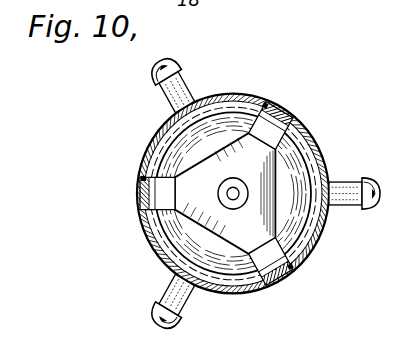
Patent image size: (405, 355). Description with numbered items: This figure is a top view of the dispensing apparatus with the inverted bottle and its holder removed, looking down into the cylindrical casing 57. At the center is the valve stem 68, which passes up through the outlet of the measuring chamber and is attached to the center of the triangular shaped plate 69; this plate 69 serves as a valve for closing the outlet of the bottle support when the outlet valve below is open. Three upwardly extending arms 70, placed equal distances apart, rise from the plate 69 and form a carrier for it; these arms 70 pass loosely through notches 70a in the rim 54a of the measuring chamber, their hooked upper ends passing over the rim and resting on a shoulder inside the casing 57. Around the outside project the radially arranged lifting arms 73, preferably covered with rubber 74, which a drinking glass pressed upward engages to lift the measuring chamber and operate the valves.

The cylindrical casing 57 is at (147, 137).
The rim of the measuring chamber 54a is at (149, 231).
The valve stem 68 is at (236, 191).
The triangular shaped plate 69 is at (268, 165).
The upwardly extending arms 70 is at (163, 197).
The notches 70a is at (263, 58).
The lifting arms 73 is at (156, 79).
The rubber 74 is at (182, 94).